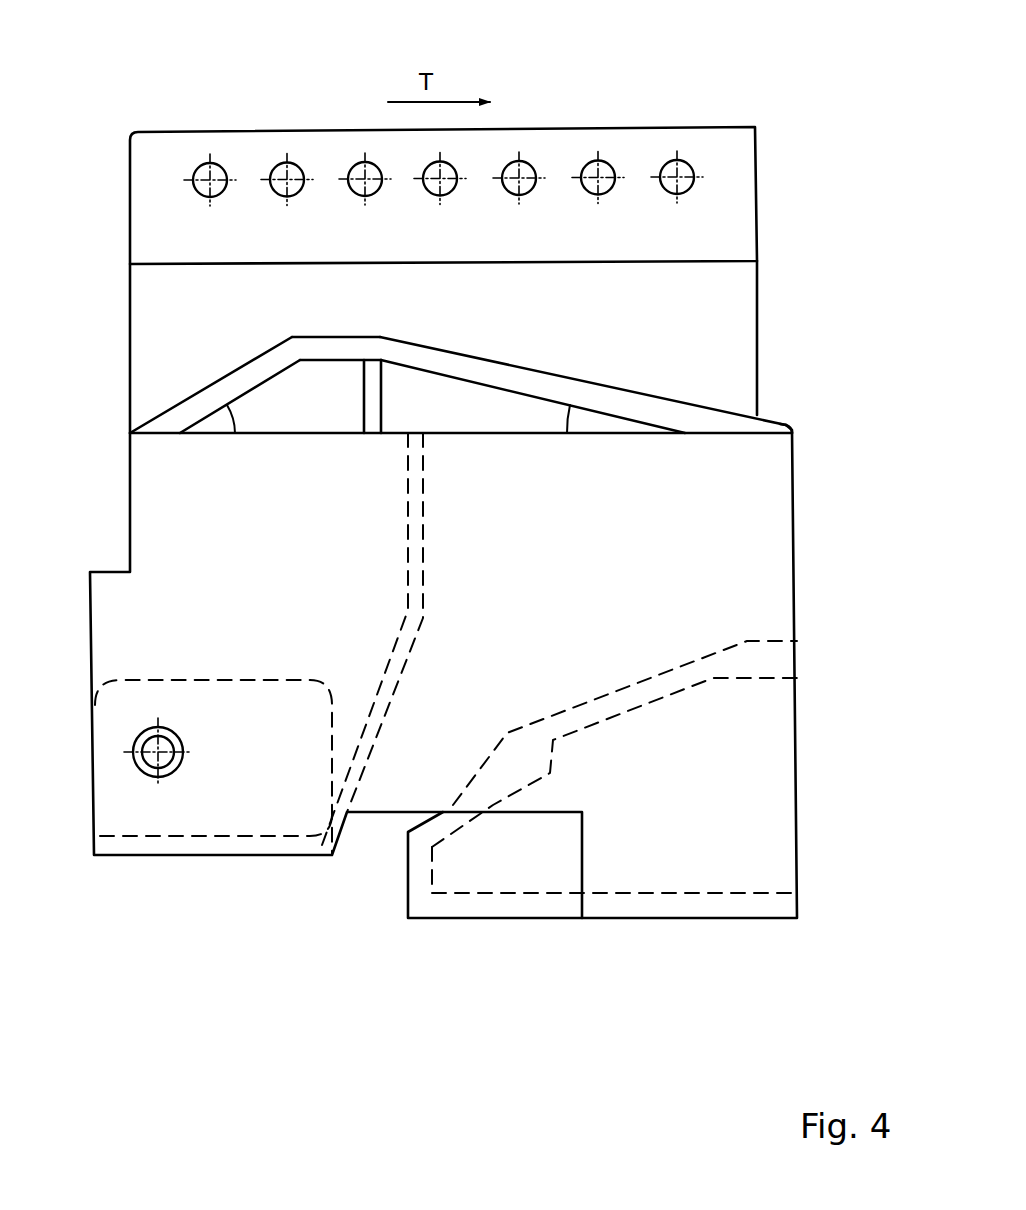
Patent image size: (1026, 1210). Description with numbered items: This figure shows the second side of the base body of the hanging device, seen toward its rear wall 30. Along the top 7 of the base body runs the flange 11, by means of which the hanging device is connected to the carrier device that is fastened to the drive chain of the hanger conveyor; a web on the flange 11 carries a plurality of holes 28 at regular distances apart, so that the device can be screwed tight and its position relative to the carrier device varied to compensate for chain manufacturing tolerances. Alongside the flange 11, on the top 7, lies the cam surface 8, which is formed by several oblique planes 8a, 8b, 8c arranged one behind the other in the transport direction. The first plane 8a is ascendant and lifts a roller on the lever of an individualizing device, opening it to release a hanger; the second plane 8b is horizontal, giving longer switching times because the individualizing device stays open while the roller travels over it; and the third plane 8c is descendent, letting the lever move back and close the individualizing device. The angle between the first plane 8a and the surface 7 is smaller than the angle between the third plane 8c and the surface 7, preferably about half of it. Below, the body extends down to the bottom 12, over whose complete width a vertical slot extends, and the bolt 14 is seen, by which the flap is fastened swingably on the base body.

The top 7 is at (768, 417).
The cam surface 8 is at (461, 351).
The first plane 8a is at (652, 405).
The second plane 8b is at (341, 345).
The third plane 8c is at (208, 400).
The flange 11 is at (760, 307).
The bottom 12 is at (482, 921).
The bolt 14 is at (140, 762).
The holes 28 is at (680, 160).
The rear wall 30 is at (129, 401).